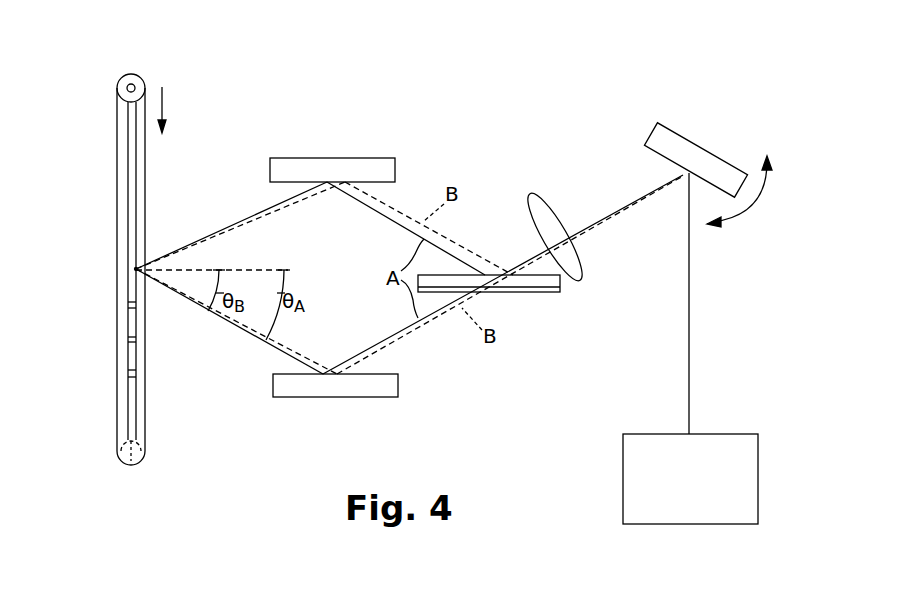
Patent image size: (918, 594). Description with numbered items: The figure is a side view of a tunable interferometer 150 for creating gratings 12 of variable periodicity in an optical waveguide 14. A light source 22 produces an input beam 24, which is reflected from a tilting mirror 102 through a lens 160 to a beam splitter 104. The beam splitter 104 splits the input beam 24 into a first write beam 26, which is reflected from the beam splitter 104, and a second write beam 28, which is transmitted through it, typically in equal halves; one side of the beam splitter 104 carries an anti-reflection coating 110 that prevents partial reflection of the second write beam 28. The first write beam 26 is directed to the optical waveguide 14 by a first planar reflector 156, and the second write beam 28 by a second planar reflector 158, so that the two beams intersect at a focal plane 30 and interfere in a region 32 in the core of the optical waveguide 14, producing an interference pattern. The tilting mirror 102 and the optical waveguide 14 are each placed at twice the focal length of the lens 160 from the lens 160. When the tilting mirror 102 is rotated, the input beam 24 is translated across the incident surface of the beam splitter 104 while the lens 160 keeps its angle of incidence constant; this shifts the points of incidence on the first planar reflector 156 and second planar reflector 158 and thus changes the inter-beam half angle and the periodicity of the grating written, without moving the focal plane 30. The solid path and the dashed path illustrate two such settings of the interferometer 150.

The optical waveguide 14 is at (117, 125).
The gratings 12 is at (112, 262).
The focal plane 30 is at (141, 286).
The region 32 is at (131, 263).
The first planar reflector 156 is at (327, 158).
The second planar reflector 158 is at (365, 397).
The first write beam 26 is at (392, 212).
The second write beam 28 is at (384, 338).
The beam splitter 104 is at (560, 288).
The anti-reflection coating 110 is at (552, 303).
The lens 160 is at (548, 210).
The tilting mirror 102 is at (704, 143).
The input beam 24 is at (690, 340).
The light source 22 is at (663, 526).
The tunable interferometer 150 is at (497, 110).